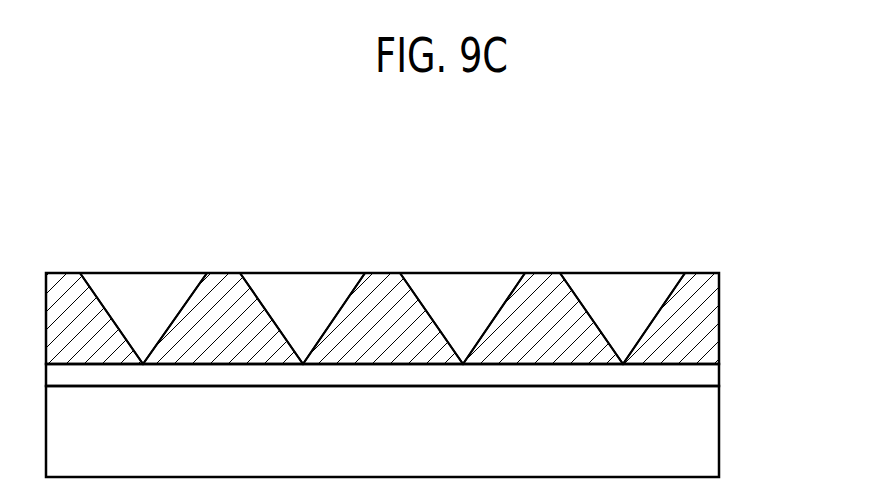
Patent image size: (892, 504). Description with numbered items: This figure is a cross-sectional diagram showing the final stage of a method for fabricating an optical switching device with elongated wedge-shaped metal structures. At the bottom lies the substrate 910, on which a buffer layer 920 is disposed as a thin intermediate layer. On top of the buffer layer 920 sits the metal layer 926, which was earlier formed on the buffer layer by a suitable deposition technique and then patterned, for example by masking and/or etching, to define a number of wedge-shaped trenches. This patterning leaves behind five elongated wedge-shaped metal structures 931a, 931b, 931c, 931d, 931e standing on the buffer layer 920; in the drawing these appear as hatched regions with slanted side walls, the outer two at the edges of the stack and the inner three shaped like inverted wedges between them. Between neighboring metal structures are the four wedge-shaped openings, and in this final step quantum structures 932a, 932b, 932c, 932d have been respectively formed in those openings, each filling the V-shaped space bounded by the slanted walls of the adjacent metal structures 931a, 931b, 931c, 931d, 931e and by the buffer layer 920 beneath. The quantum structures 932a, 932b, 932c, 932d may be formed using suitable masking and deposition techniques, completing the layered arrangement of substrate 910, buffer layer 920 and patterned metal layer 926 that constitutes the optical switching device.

The substrate 910 is at (719, 432).
The buffer layer 920 is at (719, 372).
The metal layer 926 is at (719, 318).
The elongated wedge-shaped metal structure 931a is at (62, 273).
The elongated wedge-shaped metal structure 931b is at (222, 273).
The elongated wedge-shaped metal structure 931c is at (382, 273).
The elongated wedge-shaped metal structure 931d is at (542, 273).
The elongated wedge-shaped metal structure 931e is at (702, 273).
The quantum structure 932a is at (144, 273).
The quantum structure 932b is at (297, 273).
The quantum structure 932c is at (463, 273).
The quantum structure 932d is at (622, 273).